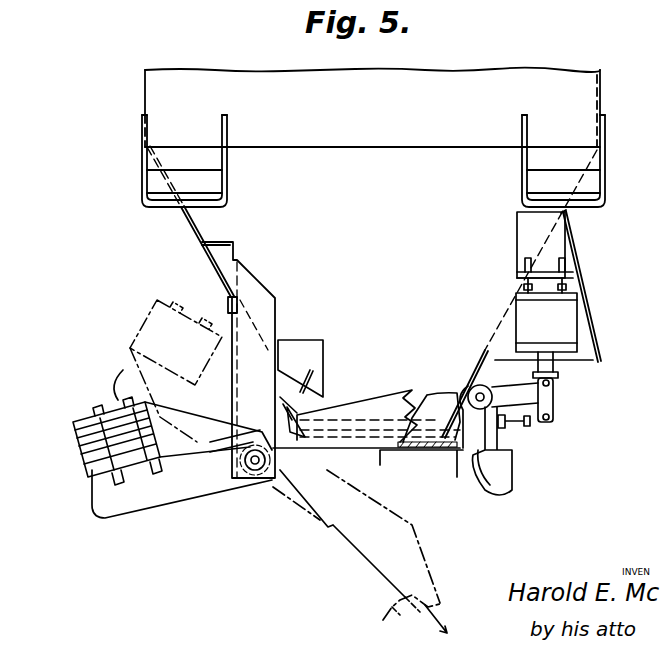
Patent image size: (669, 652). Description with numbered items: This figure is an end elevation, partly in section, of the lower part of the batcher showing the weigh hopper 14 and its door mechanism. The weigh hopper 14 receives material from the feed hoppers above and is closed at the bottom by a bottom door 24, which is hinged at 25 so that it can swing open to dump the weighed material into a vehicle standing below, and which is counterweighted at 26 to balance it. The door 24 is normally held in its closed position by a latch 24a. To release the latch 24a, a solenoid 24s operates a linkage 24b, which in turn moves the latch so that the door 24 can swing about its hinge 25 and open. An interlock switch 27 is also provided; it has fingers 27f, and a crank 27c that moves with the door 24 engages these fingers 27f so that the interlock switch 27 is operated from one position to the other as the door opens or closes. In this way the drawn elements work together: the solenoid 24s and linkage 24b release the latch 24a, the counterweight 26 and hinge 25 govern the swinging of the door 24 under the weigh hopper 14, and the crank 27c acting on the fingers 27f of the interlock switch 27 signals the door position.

The weigh hopper 14 is at (235, 224).
The bottom door 24 is at (385, 445).
The latch 24a is at (507, 448).
The linkage 24b is at (558, 393).
The solenoid 24s is at (572, 317).
The hinge 25 is at (258, 478).
The counterweight 26 is at (73, 446).
The interlock switch 27 is at (318, 373).
The crank 27c is at (203, 377).
The fingers 27f is at (297, 413).